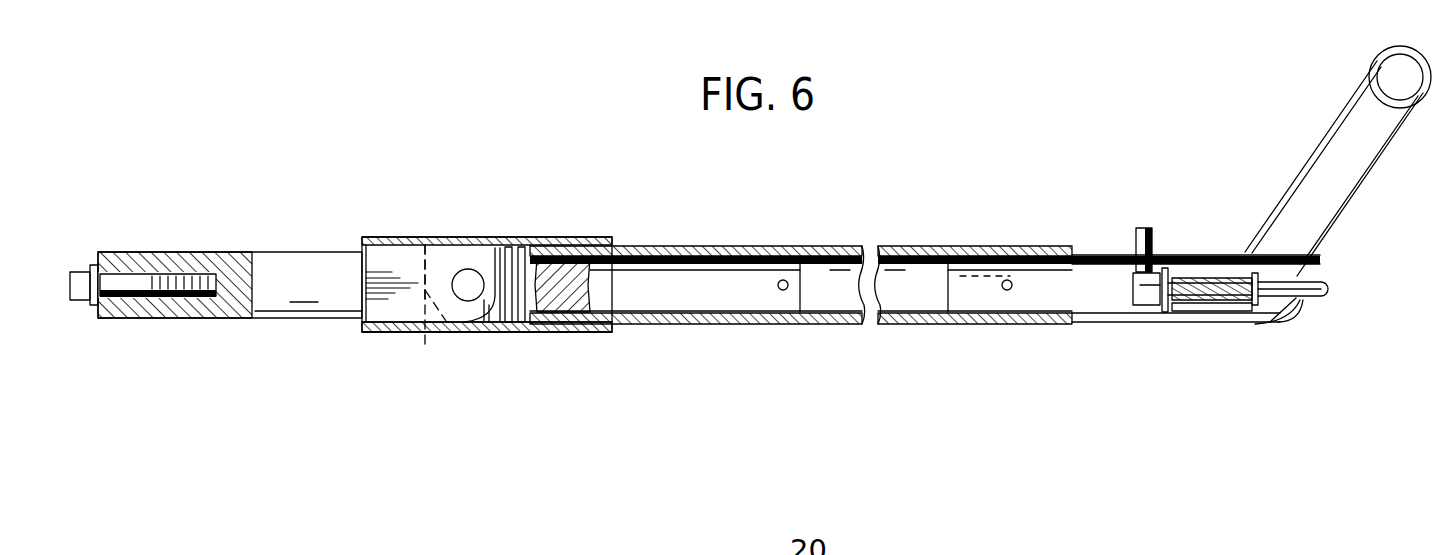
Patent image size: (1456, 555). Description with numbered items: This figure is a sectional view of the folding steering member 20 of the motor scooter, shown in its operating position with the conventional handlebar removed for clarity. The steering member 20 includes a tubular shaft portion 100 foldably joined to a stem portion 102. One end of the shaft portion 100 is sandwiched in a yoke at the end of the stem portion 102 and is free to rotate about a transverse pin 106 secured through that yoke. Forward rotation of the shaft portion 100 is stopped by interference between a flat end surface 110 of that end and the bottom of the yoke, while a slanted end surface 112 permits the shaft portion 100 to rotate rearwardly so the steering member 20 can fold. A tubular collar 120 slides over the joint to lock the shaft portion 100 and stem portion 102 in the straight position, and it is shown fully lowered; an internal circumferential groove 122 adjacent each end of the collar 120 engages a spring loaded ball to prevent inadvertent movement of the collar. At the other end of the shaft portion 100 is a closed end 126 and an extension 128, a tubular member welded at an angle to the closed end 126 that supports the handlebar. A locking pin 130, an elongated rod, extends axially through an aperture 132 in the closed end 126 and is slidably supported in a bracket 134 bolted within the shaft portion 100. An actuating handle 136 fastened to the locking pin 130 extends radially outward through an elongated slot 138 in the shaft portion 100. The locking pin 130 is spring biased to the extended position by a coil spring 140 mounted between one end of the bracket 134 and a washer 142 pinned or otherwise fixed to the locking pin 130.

The steering member 20 is at (698, 221).
The tubular shaft portion 100 is at (828, 246).
The stem portion 102 is at (284, 252).
The transverse pin 106 is at (470, 282).
The flat end surface 110 is at (425, 262).
The slanted end surface 112 is at (430, 311).
The tubular collar 120 is at (570, 238).
The internal circumferential groove 122 is at (398, 334).
The closed end 126 is at (1280, 324).
The extension 128 is at (1337, 210).
The locking pin 130 is at (1330, 290).
The aperture 132 is at (1268, 307).
The bracket 134 is at (1220, 322).
The actuating handle 136 is at (1138, 228).
The elongated slot 138 is at (1167, 260).
The coil spring 140 is at (1202, 324).
The washer 142 is at (1258, 325).